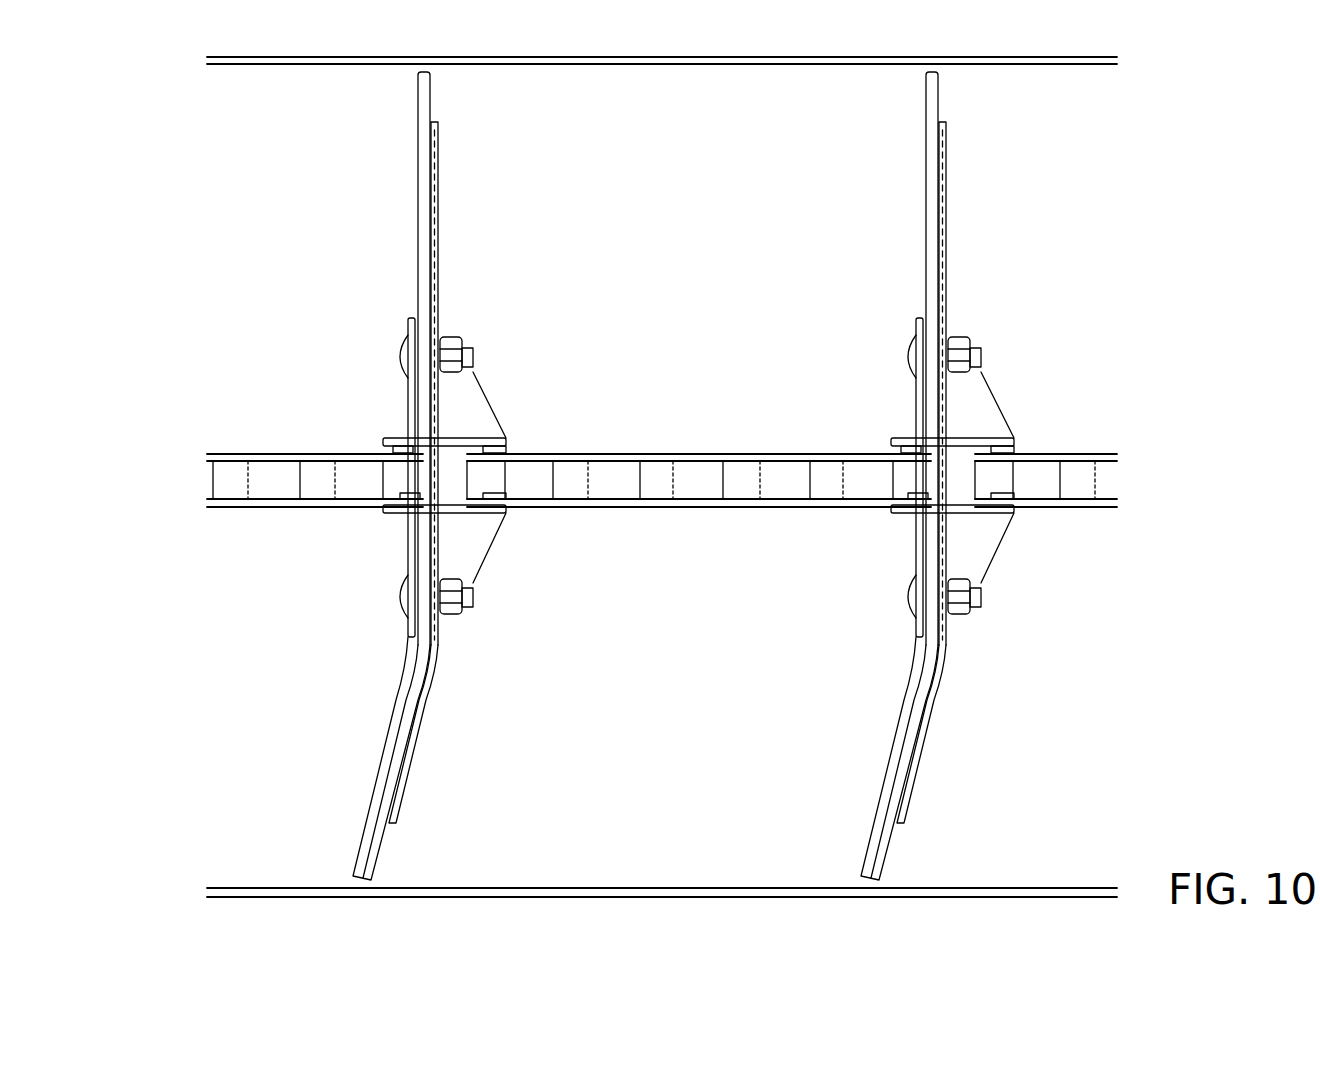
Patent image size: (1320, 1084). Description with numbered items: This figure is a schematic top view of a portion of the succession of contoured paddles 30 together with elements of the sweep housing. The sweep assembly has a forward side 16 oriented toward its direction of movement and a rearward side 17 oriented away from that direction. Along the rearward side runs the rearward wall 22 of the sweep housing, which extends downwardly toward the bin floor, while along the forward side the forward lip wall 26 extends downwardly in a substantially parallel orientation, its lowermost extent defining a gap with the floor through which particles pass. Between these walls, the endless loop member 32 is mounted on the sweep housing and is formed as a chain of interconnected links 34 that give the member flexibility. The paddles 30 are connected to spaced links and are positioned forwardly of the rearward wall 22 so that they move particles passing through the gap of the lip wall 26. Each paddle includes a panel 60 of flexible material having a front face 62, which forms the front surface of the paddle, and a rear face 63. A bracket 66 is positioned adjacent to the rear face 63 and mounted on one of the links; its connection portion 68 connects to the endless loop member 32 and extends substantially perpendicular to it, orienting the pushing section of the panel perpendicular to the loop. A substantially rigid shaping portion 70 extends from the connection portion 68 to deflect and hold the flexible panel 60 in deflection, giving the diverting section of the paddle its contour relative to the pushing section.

The rearward side 17 is at (172, 47).
The rearward wall 22 is at (1062, 78).
The forward lip wall 26 is at (1062, 885).
The forward side 16 is at (1068, 928).
The endless loop member 32 is at (655, 432).
The interconnected links 34 is at (697, 512).
The bracket 66 is at (1022, 389).
The connection portion 68 is at (950, 567).
The front face 62 is at (366, 831).
The rear face 63 is at (383, 843).
The shaping portion 70 is at (923, 746).
The panel 60 is at (860, 826).
The paddles 30 is at (878, 684).